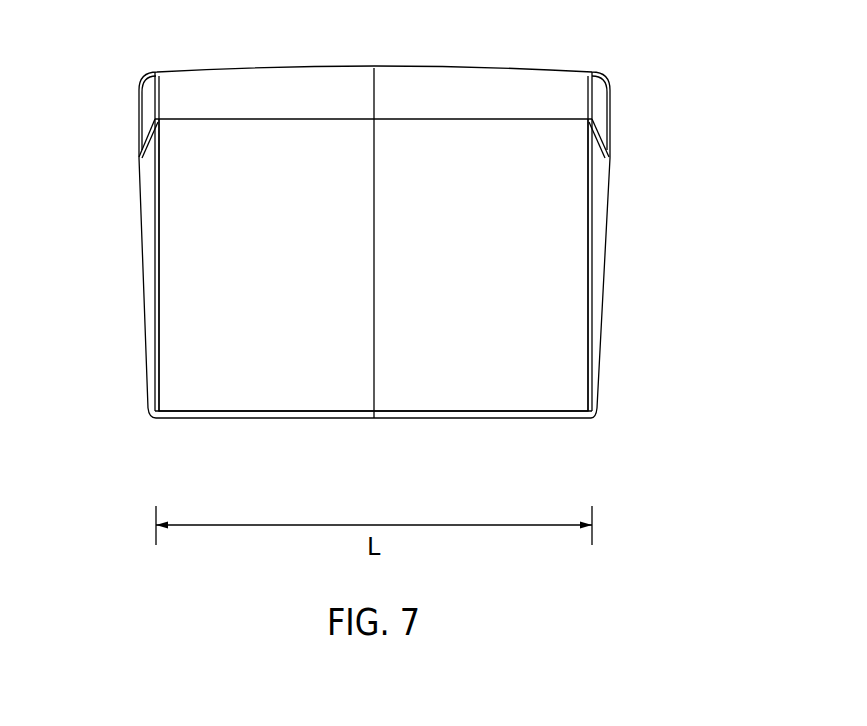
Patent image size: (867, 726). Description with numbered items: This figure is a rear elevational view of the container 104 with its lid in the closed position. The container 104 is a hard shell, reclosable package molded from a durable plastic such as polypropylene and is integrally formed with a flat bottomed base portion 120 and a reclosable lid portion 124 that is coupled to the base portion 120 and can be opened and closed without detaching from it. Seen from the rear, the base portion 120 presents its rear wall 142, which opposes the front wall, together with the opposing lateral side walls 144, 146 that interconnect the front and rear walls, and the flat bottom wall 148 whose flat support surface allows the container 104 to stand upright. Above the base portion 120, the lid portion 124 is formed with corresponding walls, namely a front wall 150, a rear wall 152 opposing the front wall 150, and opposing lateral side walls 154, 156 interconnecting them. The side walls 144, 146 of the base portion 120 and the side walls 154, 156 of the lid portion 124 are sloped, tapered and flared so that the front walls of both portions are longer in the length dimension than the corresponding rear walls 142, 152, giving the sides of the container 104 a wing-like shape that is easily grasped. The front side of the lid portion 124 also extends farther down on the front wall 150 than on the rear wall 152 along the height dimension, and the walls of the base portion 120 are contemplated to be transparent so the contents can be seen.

The container 104 is at (678, 70).
The base portion 120 is at (612, 357).
The lid portion 124 is at (575, 68).
The rear wall 142 is at (508, 397).
The lateral side wall 144 is at (607, 232).
The lateral side wall 146 is at (147, 236).
The bottom wall 148 is at (415, 419).
The front wall 150 is at (612, 123).
The rear wall 152 is at (450, 88).
The lateral side wall 154 is at (600, 102).
The lateral side wall 156 is at (143, 106).